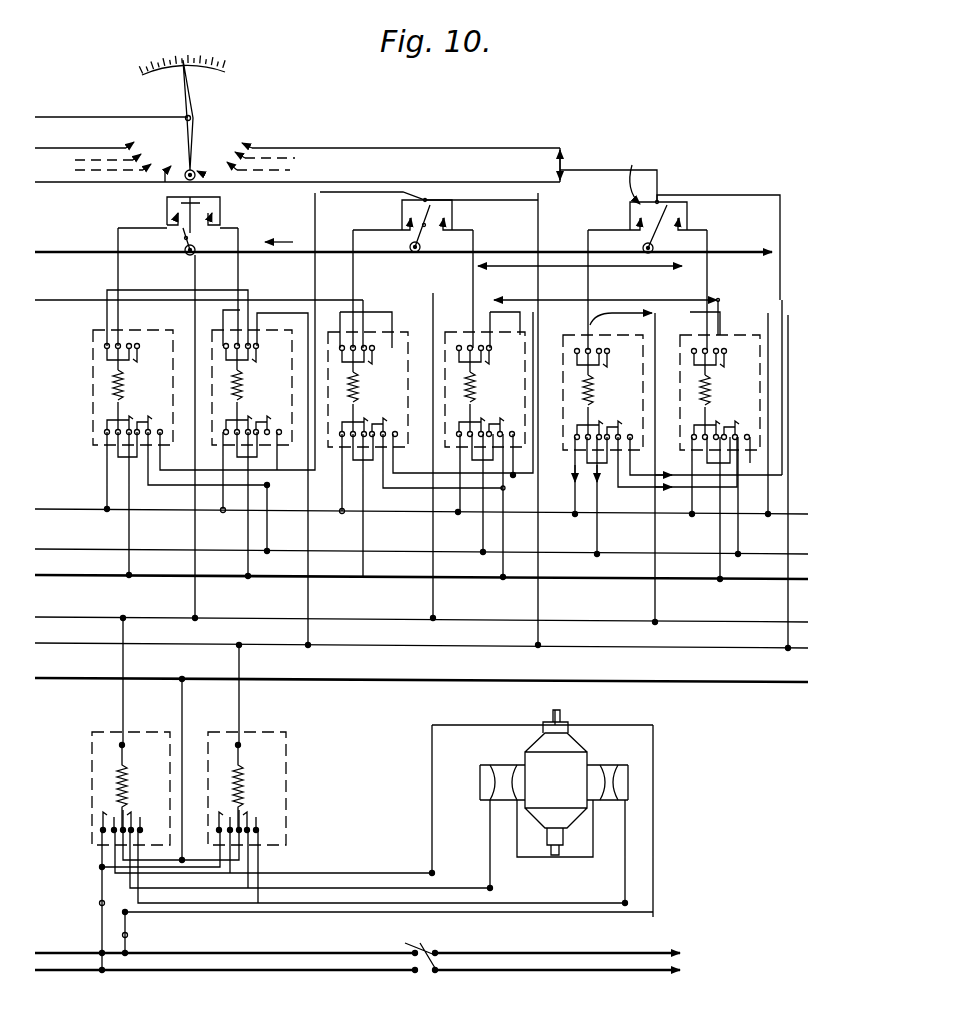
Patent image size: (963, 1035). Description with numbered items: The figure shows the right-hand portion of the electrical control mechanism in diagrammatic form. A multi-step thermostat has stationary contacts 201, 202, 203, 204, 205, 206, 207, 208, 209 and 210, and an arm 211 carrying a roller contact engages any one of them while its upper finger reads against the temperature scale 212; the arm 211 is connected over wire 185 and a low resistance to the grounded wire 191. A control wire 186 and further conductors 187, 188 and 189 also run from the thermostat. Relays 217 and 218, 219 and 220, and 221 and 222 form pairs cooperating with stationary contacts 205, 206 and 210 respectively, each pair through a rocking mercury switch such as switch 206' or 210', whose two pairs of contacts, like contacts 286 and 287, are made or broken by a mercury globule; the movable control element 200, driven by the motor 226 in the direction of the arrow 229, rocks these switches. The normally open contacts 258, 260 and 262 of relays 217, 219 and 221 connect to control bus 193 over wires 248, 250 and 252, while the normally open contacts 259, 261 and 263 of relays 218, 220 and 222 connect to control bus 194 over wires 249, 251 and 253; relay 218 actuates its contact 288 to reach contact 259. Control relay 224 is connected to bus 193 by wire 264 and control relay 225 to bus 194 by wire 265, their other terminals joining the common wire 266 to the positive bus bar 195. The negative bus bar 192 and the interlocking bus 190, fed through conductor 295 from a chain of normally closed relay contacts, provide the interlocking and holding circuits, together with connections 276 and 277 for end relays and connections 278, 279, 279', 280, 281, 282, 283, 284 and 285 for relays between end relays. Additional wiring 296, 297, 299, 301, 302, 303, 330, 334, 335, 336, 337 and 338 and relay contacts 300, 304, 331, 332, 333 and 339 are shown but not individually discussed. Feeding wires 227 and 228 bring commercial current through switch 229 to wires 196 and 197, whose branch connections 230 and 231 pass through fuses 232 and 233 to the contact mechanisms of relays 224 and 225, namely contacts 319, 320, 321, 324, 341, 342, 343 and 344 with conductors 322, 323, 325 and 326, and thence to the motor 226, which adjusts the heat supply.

The wire 185 is at (52, 117).
The control wire 186 is at (48, 150).
The conductor 187 is at (84, 184).
The conductor 188 is at (44, 183).
The conductor 189 is at (48, 299).
The interlocking bus 190 is at (48, 509).
The grounded wire 191 is at (50, 549).
The negative bus bar 192 is at (38, 575).
The control bus 193 is at (44, 617).
The control bus 194 is at (38, 643).
The positive bus bar 195 is at (48, 678).
The wire 196 is at (42, 949).
The wire 197 is at (52, 972).
The movable control element 200 is at (62, 243).
The stationary contact 201 is at (125, 147).
The stationary contact 202 is at (122, 146).
The stationary contact 203 is at (140, 203).
The stationary contact 204 is at (174, 171).
The stationary contact 205 is at (175, 202).
The stationary contact 206 is at (208, 167).
The mercury switch 206' is at (413, 274).
The stationary contact 207 is at (223, 161).
The stationary contact 208 is at (238, 151).
The stationary contact 209 is at (264, 131).
The stationary contact 210 is at (406, 137).
The mercury switch 210' is at (684, 272).
The arm 211 is at (192, 123).
The temperature scale 212 is at (186, 64).
The relay 217 is at (133, 387).
The relay 218 is at (252, 387).
The relay 219 is at (368, 389).
The relay 220 is at (485, 389).
The relay 221 is at (603, 392).
The relay 222 is at (720, 392).
The control relay 224 is at (131, 788).
The control relay 225 is at (247, 788).
The motor 226 is at (542, 813).
The feeding wire 227 is at (512, 958).
The feeding wire 228 is at (560, 975).
The switch 229 is at (425, 985).
The branch connection 230 is at (108, 955).
The branch connection 231 is at (128, 947).
The fuse 232 is at (100, 925).
The fuse 233 is at (130, 934).
The wire 248 is at (195, 601).
The wire 249 is at (310, 608).
The wire 250 is at (433, 600).
The wire 251 is at (538, 606).
The wire 252 is at (657, 607).
The wire 253 is at (790, 610).
The normally open contact 258 is at (135, 348).
The normally open contact 259 is at (244, 352).
The normally open contact 260 is at (365, 352).
The normally open contact 261 is at (490, 352).
The normally open contact 262 is at (598, 352).
The normally open contact 263 is at (725, 352).
The wire 264 is at (123, 708).
The wire 265 is at (239, 708).
The common wire 266 is at (182, 728).
The connection 276 is at (564, 155).
The connection 277 is at (521, 270).
The connection 278 is at (647, 175).
The connection 279 is at (608, 183).
The connection 279' is at (660, 306).
The connection 280 is at (547, 301).
The connection 281 is at (621, 310).
The connection 282 is at (572, 470).
The connection 283 is at (612, 468).
The connection 284 is at (706, 456).
The connection 285 is at (677, 470).
The contact 286 is at (205, 208).
The contact 287 is at (225, 220).
The contact 288 is at (258, 348).
The conductor 295 is at (575, 355).
The conductor 296 is at (693, 355).
The conductor 297 is at (445, 332).
The conductor 299 is at (412, 295).
The contact 300 is at (376, 330).
The conductor 301 is at (300, 300).
The conductor 302 is at (232, 325).
The conductor 303 is at (200, 287).
The contact 304 is at (105, 362).
The contact 319 is at (102, 823).
The contact 320 is at (128, 815).
The contact 321 is at (103, 812).
The conductor 322 is at (340, 873).
The conductor 323 is at (350, 903).
The contact 324 is at (135, 820).
The conductor 325 is at (302, 887).
The conductor 326 is at (372, 912).
The conductor 330 is at (377, 182).
The contact 331 is at (452, 224).
The contact 332 is at (440, 222).
The contact 333 is at (473, 242).
The conductor 334 is at (513, 430).
The conductor 335 is at (460, 462).
The conductor 336 is at (436, 527).
The conductor 337 is at (522, 455).
The conductor 338 is at (538, 291).
The contact 339 is at (509, 330).
The contact 341 is at (215, 812).
The contact 342 is at (249, 813).
The contact 343 is at (222, 814).
The contact 344 is at (256, 820).